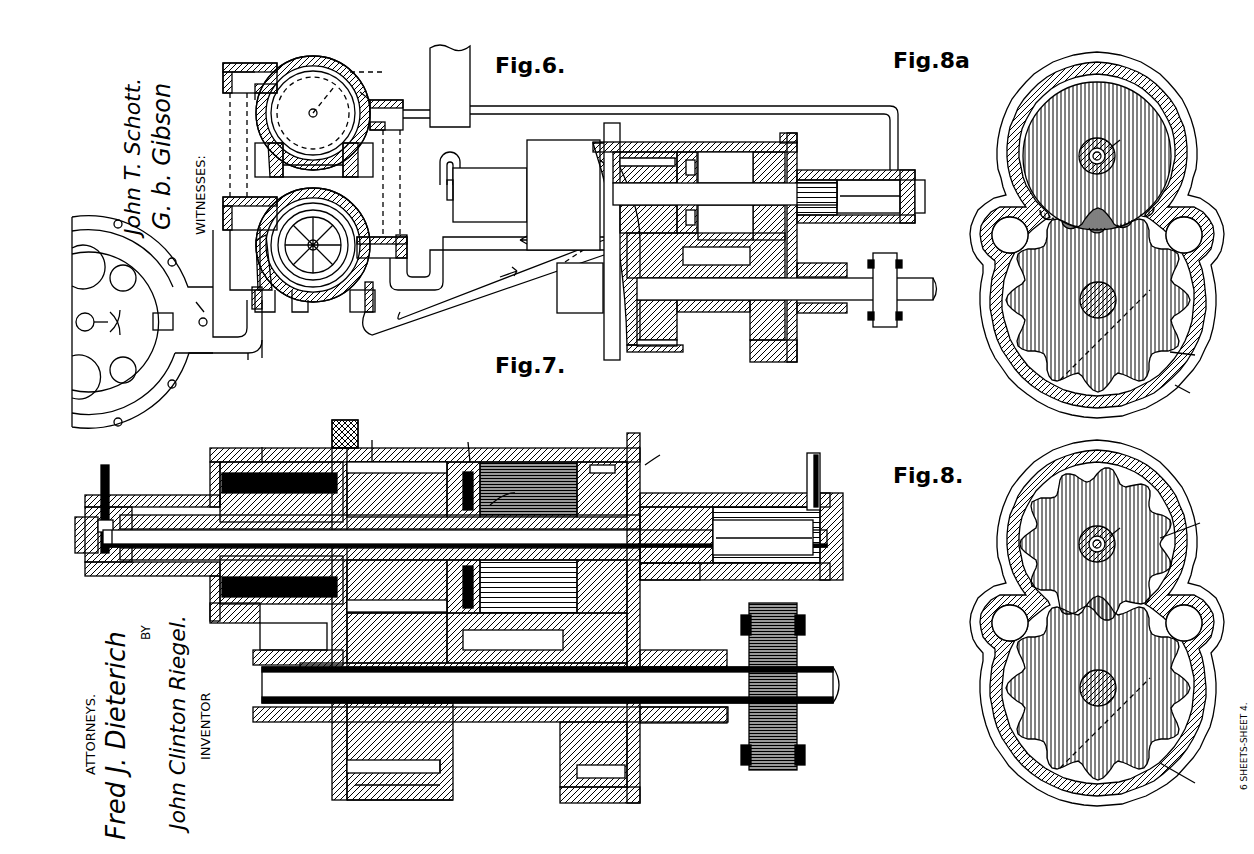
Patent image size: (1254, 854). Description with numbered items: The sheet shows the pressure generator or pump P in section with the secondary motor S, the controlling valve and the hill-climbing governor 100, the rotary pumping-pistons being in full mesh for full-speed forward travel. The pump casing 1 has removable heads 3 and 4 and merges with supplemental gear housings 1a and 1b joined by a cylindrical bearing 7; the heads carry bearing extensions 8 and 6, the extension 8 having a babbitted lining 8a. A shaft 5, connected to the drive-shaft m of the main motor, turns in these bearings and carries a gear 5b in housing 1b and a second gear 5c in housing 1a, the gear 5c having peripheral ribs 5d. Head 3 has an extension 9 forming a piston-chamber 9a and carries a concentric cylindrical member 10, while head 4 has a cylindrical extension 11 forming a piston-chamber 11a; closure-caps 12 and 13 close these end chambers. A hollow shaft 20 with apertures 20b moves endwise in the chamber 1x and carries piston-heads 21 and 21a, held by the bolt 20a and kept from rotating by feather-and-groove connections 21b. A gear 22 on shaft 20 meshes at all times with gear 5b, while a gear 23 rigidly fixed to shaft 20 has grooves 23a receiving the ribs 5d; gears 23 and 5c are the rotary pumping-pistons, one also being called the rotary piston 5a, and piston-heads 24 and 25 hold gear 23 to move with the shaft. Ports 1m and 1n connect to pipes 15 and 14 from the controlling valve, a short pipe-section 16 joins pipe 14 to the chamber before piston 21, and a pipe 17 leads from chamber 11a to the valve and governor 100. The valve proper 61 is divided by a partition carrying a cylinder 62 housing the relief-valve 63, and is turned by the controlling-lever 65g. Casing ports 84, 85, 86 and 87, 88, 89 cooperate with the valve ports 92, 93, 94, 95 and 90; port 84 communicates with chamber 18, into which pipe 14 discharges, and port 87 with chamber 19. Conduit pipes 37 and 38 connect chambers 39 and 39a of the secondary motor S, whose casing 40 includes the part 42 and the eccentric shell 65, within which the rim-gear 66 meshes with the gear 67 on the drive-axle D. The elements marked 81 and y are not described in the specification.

In FIG. 8A, the pump casing 1 is at (1200, 325).
In FIG. 6, the supplemental gear housing 1a is at (632, 352).
In FIG. 7, the supplemental gear housing 1a is at (405, 790).
In FIG. 8A, the supplemental gear housing 1a is at (1190, 393).
In FIG. 8, the supplemental gear housing 1a is at (1088, 623).
In FIG. 7, the supplemental gear housing 1b is at (562, 787).
In FIG. 8A, the inlet port 1m is at (1184, 235).
In FIG. 8, the inlet port 1m is at (1184, 623).
In FIG. 8A, the outlet port 1n is at (1010, 235).
In FIG. 8, the outlet port 1n is at (1010, 623).
In FIG. 6, the casing chamber 1x is at (725, 167).
In FIG. 7, the casing chamber 1x is at (500, 455).
In FIG. 6, the casing head 3 is at (604, 325).
In FIG. 7, the casing head 3 is at (347, 738).
In FIG. 6, the casing head 4 is at (797, 252).
In FIG. 7, the casing head 4 is at (640, 622).
In FIG. 6, the shaft 5 is at (862, 305).
In FIG. 7, the shaft 5 is at (262, 688).
In FIG. 8A, the shaft 5 is at (1110, 316).
In FIG. 8, the shaft 5 is at (1098, 688).
In FIG. 8, the rotary piston 5a is at (1185, 778).
In FIG. 7, the gear 5b is at (565, 745).
In FIG. 6, the gear (rotary pumping-piston) 5c is at (660, 345).
In FIG. 7, the gear (rotary pumping-piston) 5c is at (350, 760).
In FIG. 8A, the gear (rotary pumping-piston) 5c is at (1105, 335).
In FIG. 8, the gear (rotary pumping-piston) 5c is at (1105, 723).
In FIG. 7, the peripheral ribs 5d is at (440, 767).
In FIG. 8A, the peripheral ribs 5d is at (1195, 355).
In FIG. 6, the bearing extension 6 is at (822, 313).
In FIG. 7, the bearing extension 6 is at (668, 724).
In FIG. 6, the cylindrical bearing 7 is at (712, 315).
In FIG. 7, the cylindrical bearing 7 is at (520, 722).
In FIG. 6, the bearing extension 8 is at (580, 288).
In FIG. 7, the bearing extension 8 is at (443, 445).
In FIG. 7, the babbitted lining 8a is at (253, 658).
In FIG. 6, the head extension 9 is at (563, 195).
In FIG. 7, the head extension 9 is at (232, 452).
In FIG. 6, the piston-chamber 9a is at (598, 142).
In FIG. 7, the piston-chamber 9a is at (262, 447).
In FIG. 6, the cylindrical member 10 is at (487, 195).
In FIG. 7, the cylindrical member 10 is at (140, 500).
In FIG. 6, the cylindrical extension 11 is at (815, 170).
In FIG. 7, the cylindrical extension 11 is at (700, 493).
In FIG. 6, the piston-chamber 11a is at (855, 170).
In FIG. 7, the piston-chamber 11a is at (745, 493).
In FIG. 7, the closure-cap 12 is at (843, 532).
In FIG. 7, the closure-cap 13 is at (82, 517).
In FIG. 6, the pipe 14 is at (480, 243).
In FIG. 6, the pipe 15 is at (493, 298).
In FIG. 6, the short pipe-section 16 is at (440, 182).
In FIG. 7, the short pipe-section 16 is at (103, 470).
In FIG. 6, the pipe 17 is at (798, 110).
In FIG. 7, the pipe 17 is at (808, 460).
In FIG. 6, the valve chamber 18 is at (403, 112).
In FIG. 6, the valve chamber 19 is at (373, 165).
In FIG. 6, the shaft 20 is at (725, 194).
In FIG. 7, the shaft 20 is at (650, 495).
In FIG. 8A, the shaft 20 is at (1110, 165).
In FIG. 8, the shaft 20 is at (1109, 553).
In FIG. 7, the bolt 20a is at (640, 470).
In FIG. 8A, the bolt 20a is at (1128, 135).
In FIG. 8, the bolt 20a is at (1127, 524).
In FIG. 6, the apertures 20b is at (262, 150).
In FIG. 7, the apertures 20b is at (205, 480).
In FIG. 7, the piston-head 21 is at (165, 500).
In FIG. 7, the piston-head 21a is at (660, 580).
In FIG. 6, the feather-and-groove connections 21b is at (245, 66).
In FIG. 7, the feather-and-groove connections 21b is at (825, 515).
In FIG. 6, the gear 22 is at (760, 150).
In FIG. 7, the gear 22 is at (585, 458).
In FIG. 6, the gear (rotary pumping-piston) 23 is at (637, 150).
In FIG. 7, the gear (rotary pumping-piston) 23 is at (377, 443).
In FIG. 8, the gear (rotary pumping-piston) 23 is at (1095, 544).
In FIG. 6, the grooves 23a is at (683, 150).
In FIG. 7, the grooves 23a is at (425, 450).
In FIG. 8, the grooves 23a is at (1193, 525).
In FIG. 6, the piston-head 24 is at (602, 165).
In FIG. 7, the piston-head 24 is at (397, 562).
In FIG. 8A, the piston-head 24 is at (1097, 157).
In FIG. 6, the piston-head 25 is at (694, 222).
In FIG. 7, the piston-head 25 is at (422, 506).
In FIG. 6, the conduit-pipe 37 is at (232, 250).
In FIG. 6, the conduit-pipe 38 is at (265, 335).
In FIG. 6, the motor chamber 39 is at (123, 278).
In FIG. 6, the motor chamber 39a is at (112, 378).
In FIG. 6, the secondary motor casing 40 is at (171, 318).
In FIG. 6, the casing part 42 is at (140, 410).
In FIG. 6, the valve proper 61 is at (310, 66).
In FIG. 6, the cylinder 62 is at (355, 232).
In FIG. 6, the relief-valve 63 is at (335, 212).
In FIG. 6, the secondary shell 65 is at (165, 388).
In FIG. 6, the controlling-lever 65g is at (382, 71).
In FIG. 6, the rim-gear 66 is at (83, 255).
In FIG. 6, the axle gear 67 is at (97, 314).
In FIG. 6, the valve outlet 81 is at (365, 100).
In FIG. 6, the valve-casing port 84 is at (400, 240).
In FIG. 6, the valve-casing port 85 is at (258, 300).
In FIG. 6, the valve-casing port 86 is at (263, 208).
In FIG. 6, the valve-casing port 87 is at (373, 150).
In FIG. 6, the valve-casing port 88 is at (257, 143).
In FIG. 6, the valve-casing port 89 is at (268, 63).
In FIG. 6, the valve port 90 is at (255, 100).
In FIG. 6, the valve port 92 is at (318, 302).
In FIG. 6, the valve port 93 is at (373, 292).
In FIG. 6, the valve port 94 is at (258, 262).
In FIG. 6, the valve port 95 is at (313, 185).
In FIG. 6, the hill-climbing governor mechanism 100 is at (450, 86).
In FIG. 6, the drive-axle D is at (102, 323).
In FIG. 6, the pressure generator or pump P is at (709, 353).
In FIG. 8A, the pressure generator or pump P is at (1097, 235).
In FIG. 8, the pressure generator or pump P is at (1097, 623).
In FIG. 6, the secondary motor S is at (160, 308).
In FIG. 7, the drive-shaft m is at (805, 672).
In FIG. 6, the port y is at (200, 311).